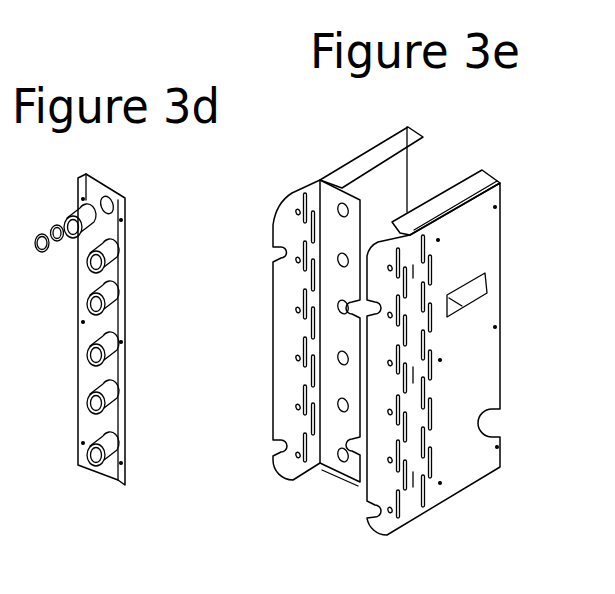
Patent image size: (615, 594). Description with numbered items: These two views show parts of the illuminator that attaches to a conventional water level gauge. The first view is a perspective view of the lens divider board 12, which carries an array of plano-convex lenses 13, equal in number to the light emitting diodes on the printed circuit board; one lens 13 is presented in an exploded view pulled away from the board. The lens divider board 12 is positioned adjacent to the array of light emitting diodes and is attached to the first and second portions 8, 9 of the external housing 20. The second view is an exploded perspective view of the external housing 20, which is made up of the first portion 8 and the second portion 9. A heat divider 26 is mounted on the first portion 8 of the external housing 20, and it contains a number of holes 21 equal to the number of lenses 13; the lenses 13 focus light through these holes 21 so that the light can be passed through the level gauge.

In FIG. 3e, the first portion 8 is at (312, 323).
In FIG. 3e, the second portion 9 is at (456, 316).
In FIG. 3d, the lens divider board 12 is at (98, 329).
In FIG. 3d, the plano-convex lens 13 is at (105, 352).
In FIG. 3e, the external housing 20 is at (460, 137).
In FIG. 3e, the hole 21 is at (342, 356).
In FIG. 3e, the heat divider 26 is at (275, 367).